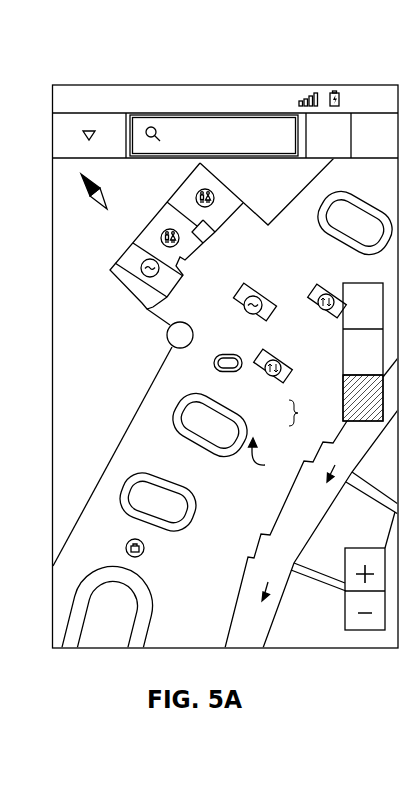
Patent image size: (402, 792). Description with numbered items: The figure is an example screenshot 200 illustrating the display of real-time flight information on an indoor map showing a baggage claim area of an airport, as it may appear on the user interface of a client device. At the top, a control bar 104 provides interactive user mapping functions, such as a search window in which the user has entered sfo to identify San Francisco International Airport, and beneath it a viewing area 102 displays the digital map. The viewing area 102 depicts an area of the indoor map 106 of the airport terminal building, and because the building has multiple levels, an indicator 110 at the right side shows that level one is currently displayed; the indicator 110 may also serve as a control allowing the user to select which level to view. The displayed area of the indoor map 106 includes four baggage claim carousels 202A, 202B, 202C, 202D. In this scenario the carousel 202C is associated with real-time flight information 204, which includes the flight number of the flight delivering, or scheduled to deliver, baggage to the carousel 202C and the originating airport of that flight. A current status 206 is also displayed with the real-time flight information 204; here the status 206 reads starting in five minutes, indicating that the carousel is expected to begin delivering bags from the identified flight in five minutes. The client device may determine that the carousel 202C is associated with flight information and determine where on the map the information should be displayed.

The screenshot 200 is at (226, 69).
The viewing area 102 is at (52, 213).
The control bar 104 is at (52, 136).
The indoor map 106 is at (150, 379).
The indicator 110 is at (343, 356).
The baggage claim carousel 202A is at (155, 605).
The baggage claim carousel 202B is at (200, 512).
The baggage claim carousel 202C is at (173, 418).
The baggage claim carousel 202D is at (340, 241).
The real-time flight information 204 is at (299, 413).
The current status 206 is at (273, 456).